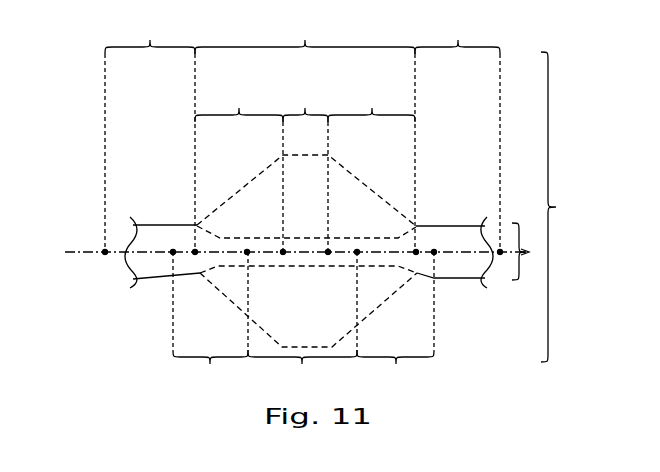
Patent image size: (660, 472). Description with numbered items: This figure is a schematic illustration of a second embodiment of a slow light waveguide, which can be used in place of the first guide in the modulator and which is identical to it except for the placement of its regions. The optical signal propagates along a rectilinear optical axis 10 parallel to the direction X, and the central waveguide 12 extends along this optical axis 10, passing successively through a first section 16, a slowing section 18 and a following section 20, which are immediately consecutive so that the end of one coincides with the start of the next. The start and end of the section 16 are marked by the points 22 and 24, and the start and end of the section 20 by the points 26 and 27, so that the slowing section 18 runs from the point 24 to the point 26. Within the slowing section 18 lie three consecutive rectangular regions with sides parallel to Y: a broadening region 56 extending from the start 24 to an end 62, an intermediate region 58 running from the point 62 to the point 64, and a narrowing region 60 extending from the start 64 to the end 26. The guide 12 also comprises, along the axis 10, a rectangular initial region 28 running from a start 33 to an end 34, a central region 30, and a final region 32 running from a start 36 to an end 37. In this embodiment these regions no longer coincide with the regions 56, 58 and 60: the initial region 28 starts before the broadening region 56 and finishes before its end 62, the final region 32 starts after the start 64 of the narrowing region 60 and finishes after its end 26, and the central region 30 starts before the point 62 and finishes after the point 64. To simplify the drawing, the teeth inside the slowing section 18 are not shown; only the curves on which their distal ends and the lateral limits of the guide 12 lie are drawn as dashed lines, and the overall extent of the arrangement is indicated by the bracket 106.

The optical axis 10 is at (82, 250).
The central waveguide 12 is at (529, 266).
The section 16 is at (150, 34).
The slowing section 18 is at (305, 34).
The section 20 is at (457, 34).
The start of section 16 22 is at (104, 256).
The end of section 16 / start of slowing section 24 is at (194, 250).
The end of slowing section / start of section 20 26 is at (417, 250).
The end of section 20 27 is at (500, 256).
The initial region 28 is at (210, 372).
The central region 30 is at (302, 372).
The final region 32 is at (395, 372).
The start of initial region 33 is at (172, 256).
The end of initial region 34 is at (246, 256).
The start of final region 36 is at (358, 256).
The end of final region 37 is at (434, 256).
The broadening region 56 is at (239, 101).
The intermediate region 58 is at (305, 101).
The narrowing region 60 is at (371, 101).
The end of broadening region 62 is at (282, 250).
The start of narrowing region 64 is at (329, 250).
The overall length 106 is at (571, 207).